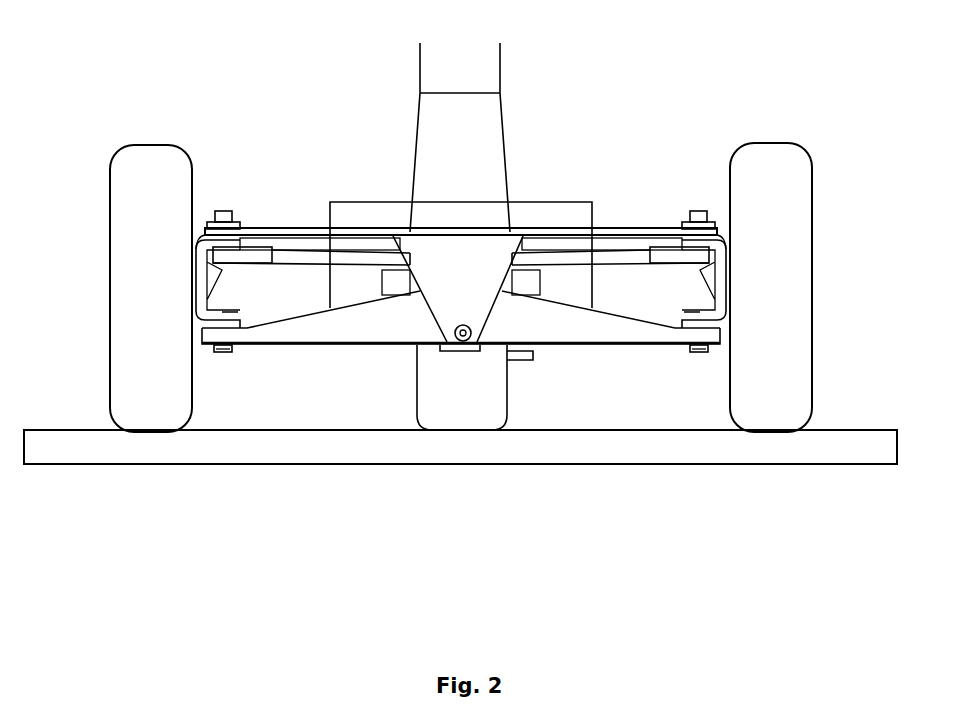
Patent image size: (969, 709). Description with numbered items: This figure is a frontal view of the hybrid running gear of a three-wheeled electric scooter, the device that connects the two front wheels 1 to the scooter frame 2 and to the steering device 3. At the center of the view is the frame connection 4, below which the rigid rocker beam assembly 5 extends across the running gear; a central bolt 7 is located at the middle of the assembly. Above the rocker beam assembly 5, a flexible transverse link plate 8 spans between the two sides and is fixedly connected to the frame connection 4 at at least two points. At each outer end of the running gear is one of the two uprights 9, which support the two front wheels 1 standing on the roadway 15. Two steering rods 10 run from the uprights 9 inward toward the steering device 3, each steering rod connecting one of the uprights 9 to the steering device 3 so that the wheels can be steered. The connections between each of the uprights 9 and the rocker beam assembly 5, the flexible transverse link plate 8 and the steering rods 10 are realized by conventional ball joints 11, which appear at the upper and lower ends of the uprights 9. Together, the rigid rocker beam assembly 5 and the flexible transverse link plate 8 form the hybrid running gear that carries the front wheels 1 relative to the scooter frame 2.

The front wheel 1 is at (152, 160).
The scooter frame 2 is at (534, 212).
The steering device 3 is at (450, 53).
The frame connection 4 is at (404, 238).
The rigid rocker beam assembly 5 is at (292, 334).
The central bolt 7 is at (470, 338).
The flexible transverse link plate 8 is at (310, 230).
The uprights 9 is at (205, 278).
The steering rods 10 is at (320, 262).
The ball joints 11 is at (222, 210).
The roadway 15 is at (817, 440).